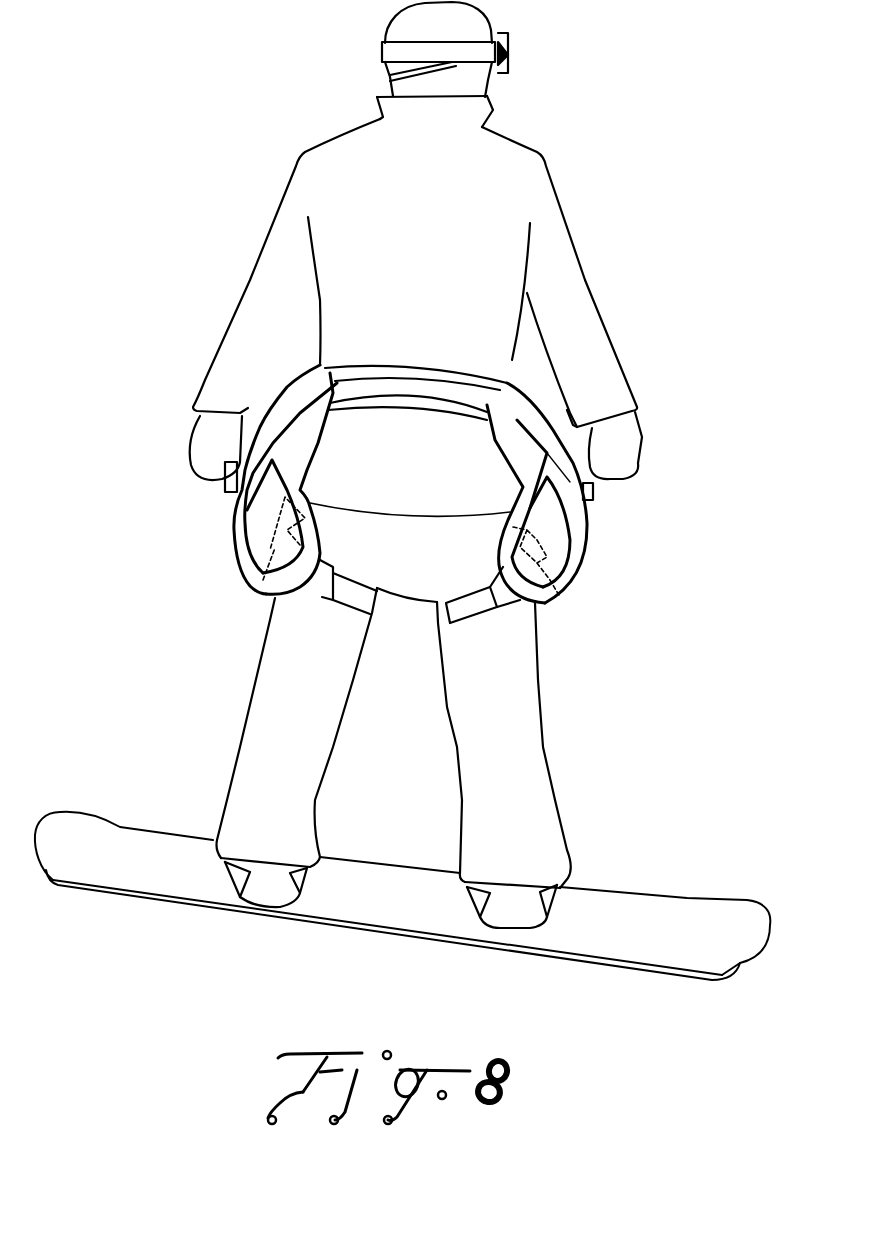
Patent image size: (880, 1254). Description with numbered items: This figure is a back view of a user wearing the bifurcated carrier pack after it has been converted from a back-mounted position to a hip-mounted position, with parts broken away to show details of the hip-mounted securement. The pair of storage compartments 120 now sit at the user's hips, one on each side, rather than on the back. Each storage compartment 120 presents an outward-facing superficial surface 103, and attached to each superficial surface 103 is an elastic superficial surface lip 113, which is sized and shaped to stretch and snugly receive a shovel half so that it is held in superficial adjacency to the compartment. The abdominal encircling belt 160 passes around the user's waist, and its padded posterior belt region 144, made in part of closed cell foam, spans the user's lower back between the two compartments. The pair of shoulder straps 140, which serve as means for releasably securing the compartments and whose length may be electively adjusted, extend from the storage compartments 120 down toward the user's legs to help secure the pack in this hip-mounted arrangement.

The superficial surface 103 is at (295, 428).
The superficial surface lip 113 is at (237, 528).
The storage compartment 120 is at (233, 567).
The shoulder strap 140 is at (342, 595).
The posterior belt region 144 is at (337, 383).
The abdominal encircling belt 160 is at (463, 390).